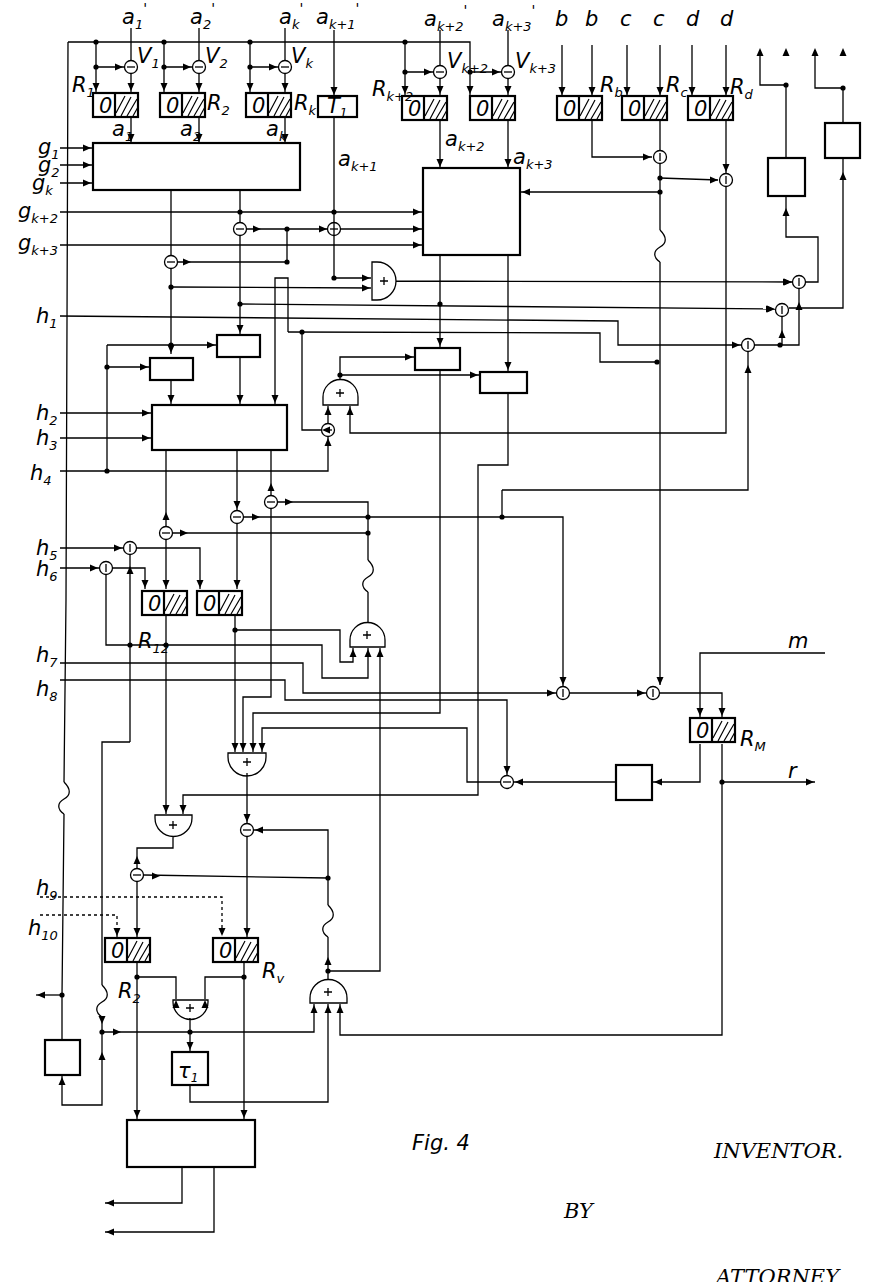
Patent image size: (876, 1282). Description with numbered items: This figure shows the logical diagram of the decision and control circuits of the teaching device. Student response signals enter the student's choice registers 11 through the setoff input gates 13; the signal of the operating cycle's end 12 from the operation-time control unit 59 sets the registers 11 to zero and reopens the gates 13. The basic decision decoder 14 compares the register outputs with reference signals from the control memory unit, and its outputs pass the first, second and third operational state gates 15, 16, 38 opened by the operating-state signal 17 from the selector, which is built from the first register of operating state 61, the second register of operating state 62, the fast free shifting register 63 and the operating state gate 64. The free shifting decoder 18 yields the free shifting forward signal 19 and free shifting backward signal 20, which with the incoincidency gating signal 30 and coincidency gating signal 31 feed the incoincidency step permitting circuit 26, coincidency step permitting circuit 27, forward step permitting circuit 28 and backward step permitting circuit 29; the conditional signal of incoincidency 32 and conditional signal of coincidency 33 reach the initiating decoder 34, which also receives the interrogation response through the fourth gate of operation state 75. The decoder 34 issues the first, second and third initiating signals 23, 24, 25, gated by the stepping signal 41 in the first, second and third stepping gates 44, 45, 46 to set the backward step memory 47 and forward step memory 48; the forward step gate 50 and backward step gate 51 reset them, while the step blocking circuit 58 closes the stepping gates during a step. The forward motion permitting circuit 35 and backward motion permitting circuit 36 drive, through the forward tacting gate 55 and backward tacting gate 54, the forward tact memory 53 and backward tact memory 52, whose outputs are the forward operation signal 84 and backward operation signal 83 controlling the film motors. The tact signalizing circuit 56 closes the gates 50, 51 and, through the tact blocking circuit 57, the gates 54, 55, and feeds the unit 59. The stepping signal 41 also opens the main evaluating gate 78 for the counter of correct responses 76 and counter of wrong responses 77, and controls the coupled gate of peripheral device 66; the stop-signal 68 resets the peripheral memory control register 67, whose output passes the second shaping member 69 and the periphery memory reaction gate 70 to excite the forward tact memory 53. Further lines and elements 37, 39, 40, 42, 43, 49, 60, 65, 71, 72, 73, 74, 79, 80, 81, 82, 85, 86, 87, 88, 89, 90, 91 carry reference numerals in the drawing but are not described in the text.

The student's choice register 11 is at (316, 130).
The signal of the operating cycle's end 12 is at (255, 541).
The setoff input gates 13 is at (331, 64).
The basic decision decoder 14 is at (180, 166).
The first operational state gate 15 is at (215, 291).
The second operational state gate 16 is at (267, 262).
The operating-state signal 17 is at (489, 353).
The free shifting decoder 18 is at (466, 211).
The free shifting forward signal 19 is at (452, 301).
The free shifting backward signal 20 is at (521, 313).
The first initiating signal 23 is at (155, 519).
The second initiating signal 24 is at (224, 533).
The third initiating signal 25 is at (252, 480).
The incoincidency step permitting circuit 26 is at (171, 370).
The coincidency step permitting circuit 27 is at (238, 347).
The forward step permitting circuit 28 is at (355, 550).
The backward step permitting circuit 29 is at (354, 592).
The incoincidency gating signal 30 is at (160, 396).
The coincidency gating signal 31 is at (492, 303).
The conditional signal of incoincidency 32 is at (156, 392).
The conditional signal of coincidency 33 is at (225, 381).
The initiating decoder 34 is at (174, 364).
The forward motion permitting circuit 35 is at (263, 783).
The backward motion permitting circuit 36 is at (162, 827).
The line 37 is at (537, 310).
The third operational-state gate 38 is at (331, 393).
The line 39 is at (241, 205).
The OR gate 40 is at (480, 276).
The stepping signal 41 is at (517, 505).
The gate 42 is at (784, 298).
The gate 43 is at (768, 316).
The first stepping gate 44 is at (272, 523).
The second stepping gate 45 is at (405, 591).
The third stepping gate 46 is at (271, 601).
The backward step memory 47 is at (168, 702).
The forward step memory 48 is at (277, 671).
The line 49 is at (95, 923).
The forward step gate 50 is at (132, 630).
The backward step gate 51 is at (216, 620).
The backward tact memory 52 is at (104, 935).
The forward tact memory 53 is at (159, 930).
The backward tacting gate 54 is at (150, 903).
The forward tacting gate 55 is at (287, 890).
The tact signalizing circuit 56 is at (208, 1024).
The tact blocking circuit 57 is at (344, 995).
The step blocking circuit 58 is at (365, 790).
The operation-time control unit 59 is at (62, 1057).
The line 60 is at (261, 1054).
The first register of operating state 61 is at (622, 140).
The second register of operating state 62 is at (608, 402).
The fast free shifting register 63 is at (741, 146).
The operating state gate 64 is at (676, 158).
The gate 65 is at (711, 181).
The coupled gate of peripheral device 66 is at (602, 685).
The peripheral memory control register 67 is at (701, 715).
The stop-signal of the periphery memories 68 is at (761, 673).
The second shaping member 69 is at (607, 772).
The periphery memory reaction gate 70 is at (401, 758).
The line 71 is at (408, 356).
The junction 72 is at (253, 205).
The line 73 is at (155, 222).
The OR gate 74 is at (356, 393).
The fourth gate of operation state 75 is at (370, 231).
The counter of correct responses 76 is at (842, 85).
The counter of wrong responses 77 is at (773, 103).
The main evaluating gate 78 is at (632, 404).
The line 79 is at (531, 889).
The output line 80 is at (49, 983).
The output line 81 is at (143, 1187).
The output line 82 is at (159, 1213).
The backward operation signal 83 is at (143, 1040).
The forward operation signal 84 is at (240, 1040).
The output unit 85 is at (191, 1143).
The junction 86 is at (252, 883).
The line 87 is at (308, 669).
The line 88 is at (285, 727).
The line 89 is at (325, 551).
The delay element 90 is at (793, 220).
The delay element 91 is at (824, 215).